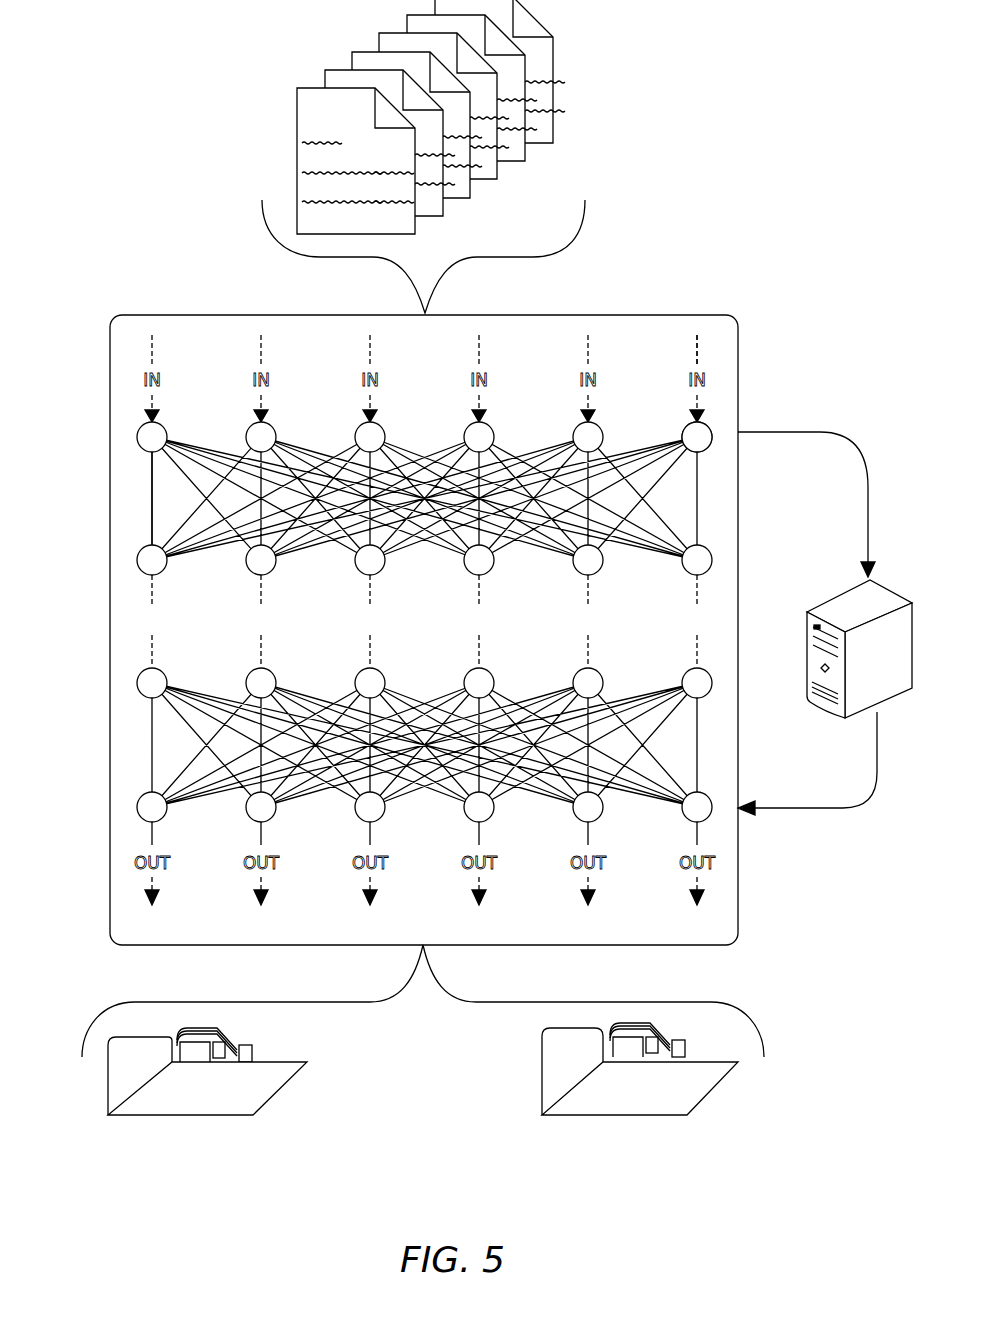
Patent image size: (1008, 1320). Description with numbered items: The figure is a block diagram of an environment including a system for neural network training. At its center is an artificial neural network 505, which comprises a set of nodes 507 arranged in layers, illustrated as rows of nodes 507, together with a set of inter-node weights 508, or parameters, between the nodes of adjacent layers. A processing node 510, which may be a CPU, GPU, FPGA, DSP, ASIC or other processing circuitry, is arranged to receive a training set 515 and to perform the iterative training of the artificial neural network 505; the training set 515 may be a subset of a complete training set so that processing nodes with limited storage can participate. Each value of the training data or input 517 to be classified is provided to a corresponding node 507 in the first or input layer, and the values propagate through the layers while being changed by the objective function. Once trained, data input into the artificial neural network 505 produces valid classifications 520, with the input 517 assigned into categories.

The artificial neural network 505 is at (185, 314).
The node 507 is at (710, 434).
The inter-node weight 508 is at (150, 497).
The processing node 510 is at (855, 585).
The training set 515 is at (297, 92).
The input 517 is at (698, 352).
The classification 520 is at (182, 1116).